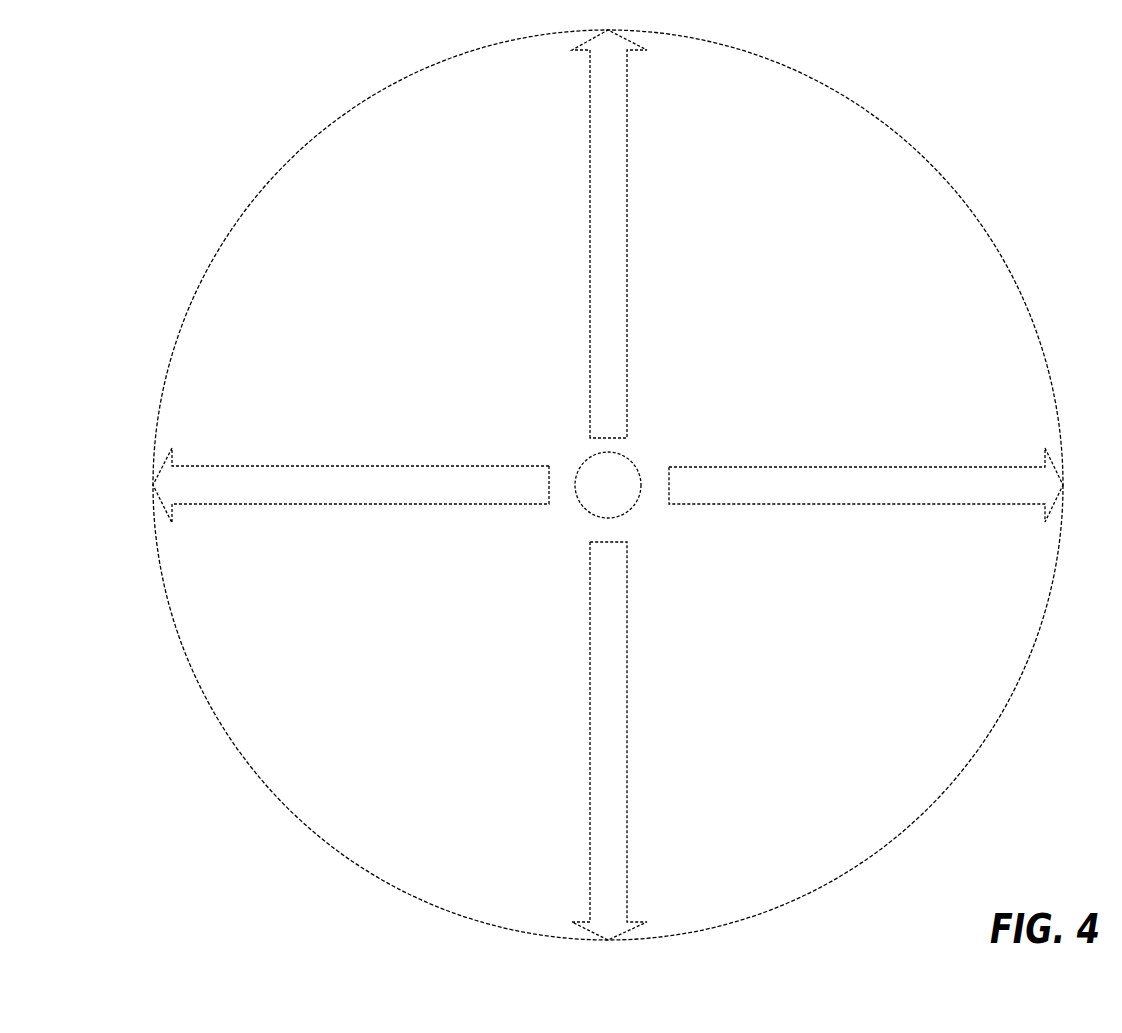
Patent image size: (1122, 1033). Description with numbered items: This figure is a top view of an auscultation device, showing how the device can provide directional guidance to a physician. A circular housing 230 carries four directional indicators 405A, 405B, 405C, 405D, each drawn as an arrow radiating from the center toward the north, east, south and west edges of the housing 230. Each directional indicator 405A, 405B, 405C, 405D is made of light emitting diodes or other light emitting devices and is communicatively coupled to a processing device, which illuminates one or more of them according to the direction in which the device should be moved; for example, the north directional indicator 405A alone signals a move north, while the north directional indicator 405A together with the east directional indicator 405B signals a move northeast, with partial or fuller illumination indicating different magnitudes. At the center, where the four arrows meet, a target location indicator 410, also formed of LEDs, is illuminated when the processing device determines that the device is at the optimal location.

The housing 230 is at (918, 143).
The north directional indicator 405A is at (590, 232).
The east directional indicator 405B is at (893, 465).
The directional indicator 405C is at (627, 795).
The directional indicator 405D is at (360, 465).
The target location indicator 410 is at (585, 462).